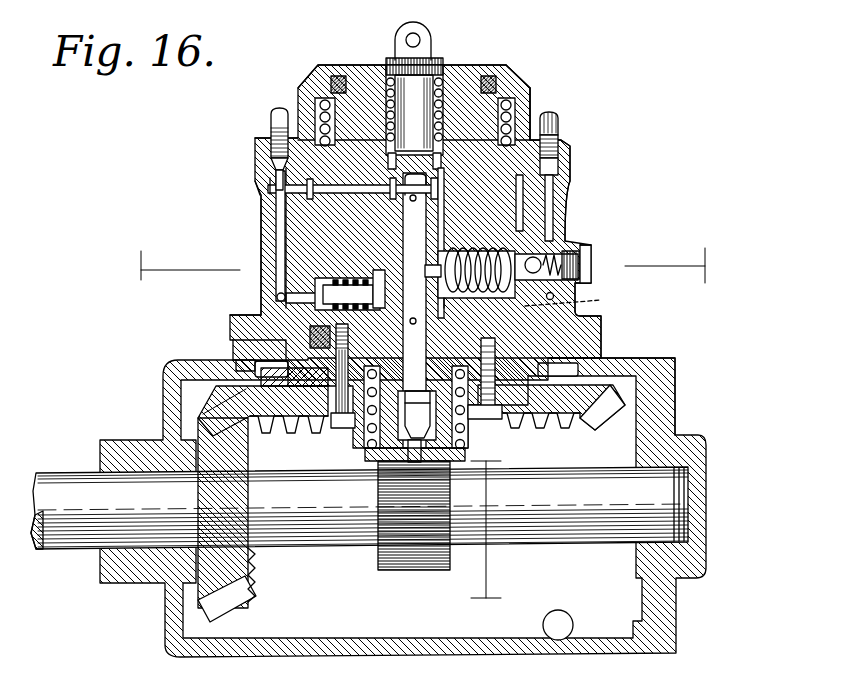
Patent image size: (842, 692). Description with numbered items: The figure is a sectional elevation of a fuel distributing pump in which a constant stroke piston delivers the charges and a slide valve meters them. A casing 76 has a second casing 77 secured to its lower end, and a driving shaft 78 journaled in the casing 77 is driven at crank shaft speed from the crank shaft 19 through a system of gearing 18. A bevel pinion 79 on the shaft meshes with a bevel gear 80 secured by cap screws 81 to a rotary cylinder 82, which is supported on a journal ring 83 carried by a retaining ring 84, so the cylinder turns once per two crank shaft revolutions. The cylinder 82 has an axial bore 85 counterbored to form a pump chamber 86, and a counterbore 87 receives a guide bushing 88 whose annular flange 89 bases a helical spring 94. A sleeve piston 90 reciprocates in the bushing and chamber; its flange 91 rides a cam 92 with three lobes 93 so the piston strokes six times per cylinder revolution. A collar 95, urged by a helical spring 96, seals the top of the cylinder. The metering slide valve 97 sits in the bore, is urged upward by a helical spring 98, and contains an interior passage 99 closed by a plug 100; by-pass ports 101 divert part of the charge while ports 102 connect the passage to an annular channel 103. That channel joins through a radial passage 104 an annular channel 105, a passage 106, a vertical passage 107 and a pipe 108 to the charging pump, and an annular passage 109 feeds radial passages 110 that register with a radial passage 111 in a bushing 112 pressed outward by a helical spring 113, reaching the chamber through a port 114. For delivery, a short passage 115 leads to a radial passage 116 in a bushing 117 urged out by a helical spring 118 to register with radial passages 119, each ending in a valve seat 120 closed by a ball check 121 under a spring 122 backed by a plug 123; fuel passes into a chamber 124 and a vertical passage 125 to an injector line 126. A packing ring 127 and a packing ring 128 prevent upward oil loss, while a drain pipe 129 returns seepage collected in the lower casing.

The system of gearing 18 is at (427, 265).
The crank shaft 19 is at (486, 532).
The casing 76 is at (247, 135).
The second casing 77 is at (168, 627).
The driving shaft 78 is at (46, 464).
The bevel pinion 79 is at (243, 600).
The bevel gear 80 is at (297, 420).
The cap screws 81 is at (358, 426).
The rotary cylinder 82 is at (548, 192).
The journal ring 83 is at (595, 322).
The retaining ring 84 is at (596, 345).
The bore 85 is at (426, 215).
The pump chamber 86 is at (438, 291).
The counterbore 87 is at (302, 333).
The guide bushing 88 is at (372, 455).
The annular flange 89 is at (325, 355).
The sleeve piston 90 is at (386, 408).
The flange 91 is at (471, 416).
The cam 92 is at (386, 548).
The lobes 93 is at (415, 111).
The helical spring 94 is at (472, 414).
The collar 95 is at (356, 72).
The helical spring 96 is at (523, 101).
The metering slide valve 97 is at (407, 73).
The helical spring 98 is at (430, 88).
The interior passage 99 is at (400, 221).
The plug 100 is at (417, 401).
The ports 101 is at (417, 329).
The ports 102 is at (417, 204).
The annular channel 103 is at (428, 181).
The radial passage 104 is at (330, 185).
The annular channel 105 is at (300, 181).
The passage 106 is at (262, 178).
The vertical passage 107 is at (266, 221).
The pipe 108 is at (262, 107).
The annular passage 109 is at (268, 289).
The radial passages 110 is at (268, 302).
The radial passage 111 is at (300, 264).
The bushing 112 is at (315, 271).
The helical spring 113 is at (340, 276).
The port 114 is at (372, 278).
The short passage 115 is at (428, 263).
The radial passage 116 is at (478, 242).
The bushing 117 is at (512, 250).
The helical spring 118 is at (581, 303).
The radial passages 119 is at (549, 289).
The valve seat 120 is at (535, 250).
The ball check 121 is at (560, 240).
The spring 122 is at (578, 246).
The plug 123 is at (584, 258).
The chamber 124 is at (590, 246).
The vertical passage 125 is at (558, 176).
The injector line 126 is at (551, 112).
The packing ring 127 is at (426, 158).
The packing ring 128 is at (502, 63).
The drain pipe 129 is at (554, 630).